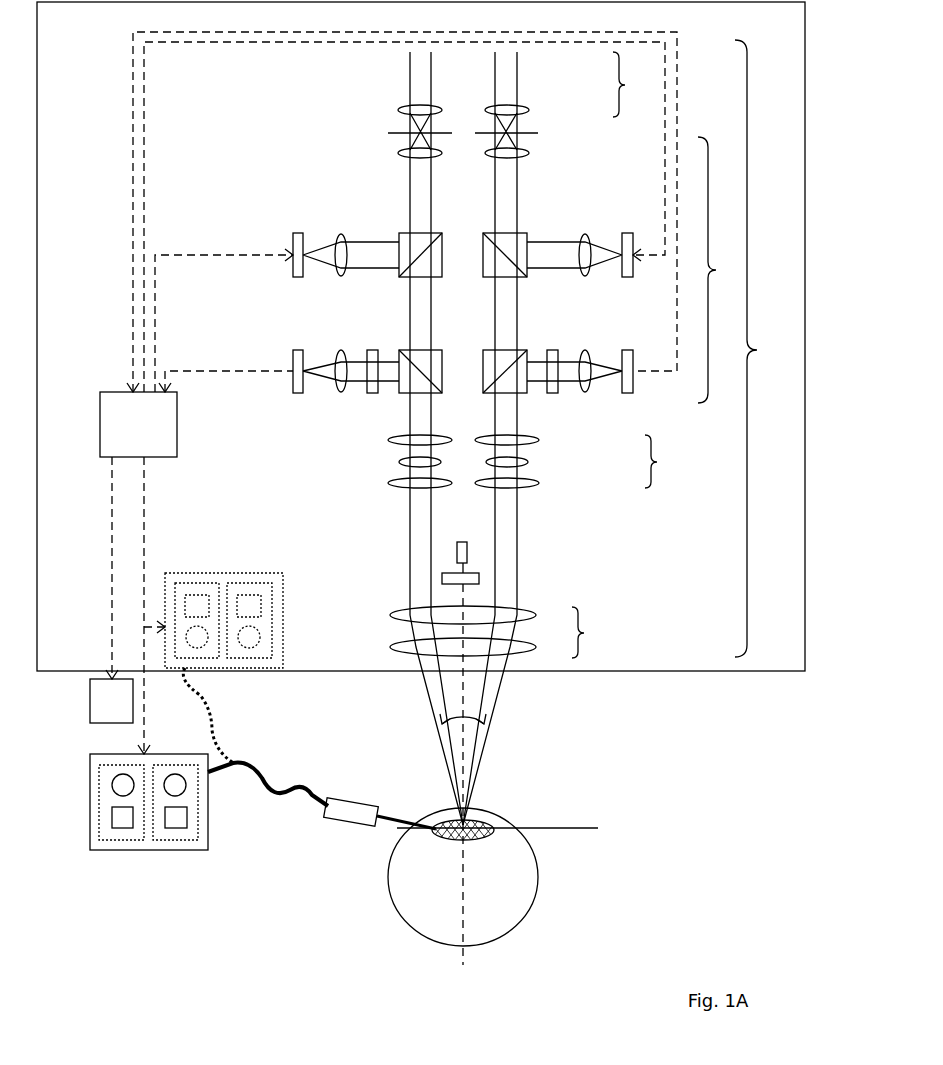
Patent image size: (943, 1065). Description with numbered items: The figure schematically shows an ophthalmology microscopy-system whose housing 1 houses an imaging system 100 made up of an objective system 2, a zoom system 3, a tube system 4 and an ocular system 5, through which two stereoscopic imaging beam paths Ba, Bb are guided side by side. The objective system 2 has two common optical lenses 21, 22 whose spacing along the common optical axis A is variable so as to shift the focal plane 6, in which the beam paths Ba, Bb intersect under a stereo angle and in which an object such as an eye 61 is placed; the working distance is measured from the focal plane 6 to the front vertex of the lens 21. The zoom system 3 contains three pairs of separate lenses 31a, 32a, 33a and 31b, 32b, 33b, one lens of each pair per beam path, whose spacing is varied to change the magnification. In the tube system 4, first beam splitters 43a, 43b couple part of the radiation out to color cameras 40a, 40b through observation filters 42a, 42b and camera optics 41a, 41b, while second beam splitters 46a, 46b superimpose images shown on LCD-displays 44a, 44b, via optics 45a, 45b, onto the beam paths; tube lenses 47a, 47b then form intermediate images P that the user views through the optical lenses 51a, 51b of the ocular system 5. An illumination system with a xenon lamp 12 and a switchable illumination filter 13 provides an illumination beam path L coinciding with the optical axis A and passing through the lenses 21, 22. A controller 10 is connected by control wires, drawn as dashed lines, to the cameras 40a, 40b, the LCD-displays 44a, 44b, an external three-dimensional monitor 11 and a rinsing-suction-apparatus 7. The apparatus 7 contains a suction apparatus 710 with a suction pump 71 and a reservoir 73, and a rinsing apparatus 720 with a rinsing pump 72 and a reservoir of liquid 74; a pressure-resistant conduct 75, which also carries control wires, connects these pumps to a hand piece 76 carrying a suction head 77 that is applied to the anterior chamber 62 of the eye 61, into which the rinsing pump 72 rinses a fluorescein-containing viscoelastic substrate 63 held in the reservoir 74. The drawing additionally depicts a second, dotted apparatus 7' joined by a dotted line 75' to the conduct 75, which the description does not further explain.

The housing 1 is at (666, 671).
The imaging system 100 is at (762, 348).
The objective system 2 is at (586, 632).
The optical lens 21 is at (395, 645).
The optical lens 22 is at (395, 613).
The zoom system 3 is at (659, 461).
The optical lens 31a is at (388, 483).
The optical lens 31b is at (539, 483).
The optical lens 32a is at (399, 462).
The optical lens 32b is at (528, 462).
The optical lens 33a is at (388, 440).
The optical lens 33b is at (539, 440).
The tube system 4 is at (714, 270).
The color camera 40a is at (298, 350).
The color camera 40b is at (628, 350).
The camera optic 41a is at (341, 350).
The camera optic 41b is at (585, 350).
The observation filter 42a is at (372, 350).
The observation filter 42b is at (553, 350).
The first beam splitter 43a is at (405, 350).
The first beam splitter 43b is at (522, 350).
The LCD-display 44a is at (298, 233).
The LCD-display 44b is at (628, 233).
The optic 45a is at (341, 234).
The optic 45b is at (585, 234).
The second beam splitter 46a is at (400, 233).
The second beam splitter 46b is at (527, 233).
The ocular system 5 is at (627, 84).
The tube lens 47a is at (398, 153).
The tube lens 47b is at (530, 153).
The optical lens 51a is at (398, 110).
The optical lens 51b is at (530, 110).
The intermediate image P is at (484, 133).
The imaging beam path Ba is at (410, 74).
The imaging beam path Bb is at (517, 76).
The illumination beam path L is at (462, 602).
The xenon lamp 12 is at (462, 541).
The switchable illumination filter 13 is at (479, 581).
The focal plane 6 is at (598, 828).
The eye 61 is at (538, 876).
The anterior chamber 62 is at (455, 842).
The viscoelastic substrate 63 is at (477, 842).
The optical axis A is at (470, 795).
The rinsing-suction-apparatus 7 is at (120, 802).
The alternative control device 7' is at (224, 594).
The suction pump 71 is at (112, 785).
The rinsing pump 72 is at (170, 774).
The reservoir 73 is at (112, 818).
The reservoir of liquid 74 is at (187, 818).
The suction apparatus 710 is at (117, 840).
The rinsing apparatus 720 is at (180, 840).
The pressure-resistant conduct 75 is at (268, 758).
The connection line 75' is at (228, 716).
The hand piece 76 is at (330, 822).
The suction head 77 is at (383, 825).
The controller 10 is at (126, 435).
The external 3D-monitor 11 is at (100, 711).